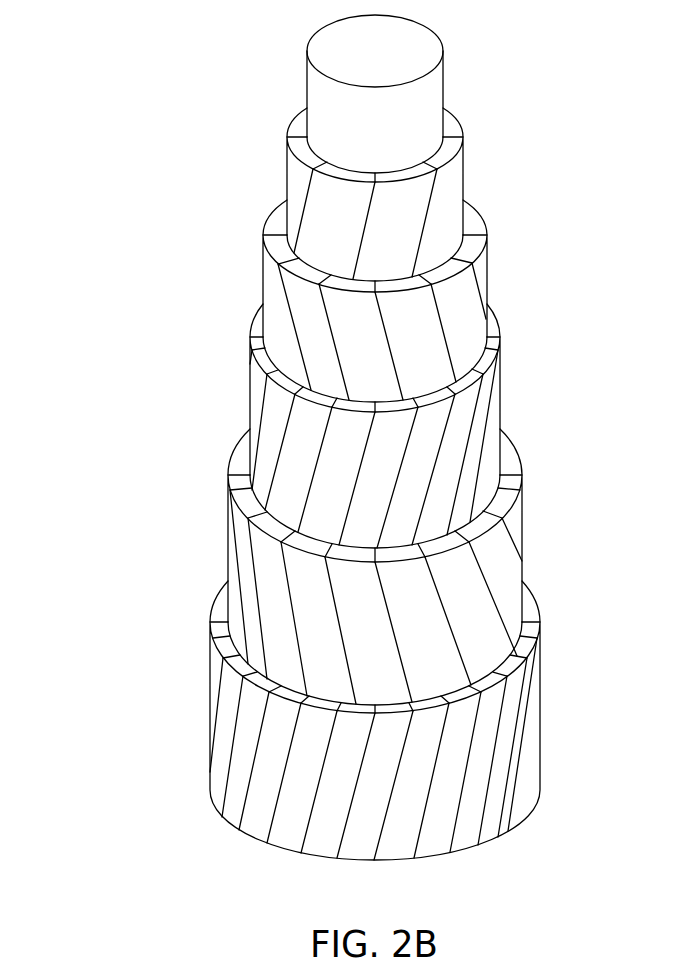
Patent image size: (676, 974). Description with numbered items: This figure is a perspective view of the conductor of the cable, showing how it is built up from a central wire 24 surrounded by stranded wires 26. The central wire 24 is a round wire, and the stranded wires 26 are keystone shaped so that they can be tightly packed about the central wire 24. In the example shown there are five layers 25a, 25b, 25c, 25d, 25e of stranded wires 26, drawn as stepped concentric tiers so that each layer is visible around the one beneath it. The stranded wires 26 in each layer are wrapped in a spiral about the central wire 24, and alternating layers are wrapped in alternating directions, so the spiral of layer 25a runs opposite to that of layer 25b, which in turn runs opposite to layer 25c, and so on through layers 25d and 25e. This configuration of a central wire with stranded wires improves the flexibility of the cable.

The central wire 24 is at (380, 44).
The first layer of stranded wires 25a is at (334, 193).
The second layer of stranded wires 25b is at (221, 271).
The third layer of stranded wires 25c is at (206, 391).
The fourth layer of stranded wires 25d is at (186, 537).
The fifth layer of stranded wires 25e is at (167, 692).
The stranded wires 26 is at (446, 186).